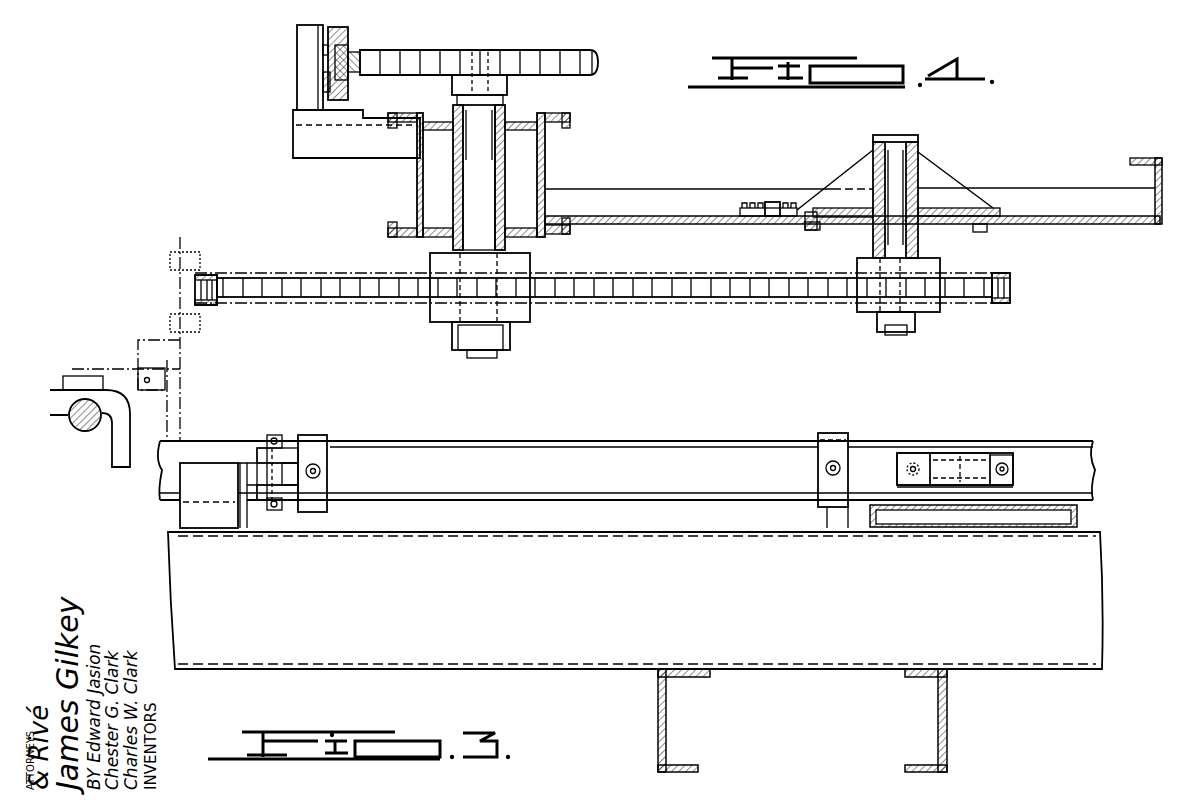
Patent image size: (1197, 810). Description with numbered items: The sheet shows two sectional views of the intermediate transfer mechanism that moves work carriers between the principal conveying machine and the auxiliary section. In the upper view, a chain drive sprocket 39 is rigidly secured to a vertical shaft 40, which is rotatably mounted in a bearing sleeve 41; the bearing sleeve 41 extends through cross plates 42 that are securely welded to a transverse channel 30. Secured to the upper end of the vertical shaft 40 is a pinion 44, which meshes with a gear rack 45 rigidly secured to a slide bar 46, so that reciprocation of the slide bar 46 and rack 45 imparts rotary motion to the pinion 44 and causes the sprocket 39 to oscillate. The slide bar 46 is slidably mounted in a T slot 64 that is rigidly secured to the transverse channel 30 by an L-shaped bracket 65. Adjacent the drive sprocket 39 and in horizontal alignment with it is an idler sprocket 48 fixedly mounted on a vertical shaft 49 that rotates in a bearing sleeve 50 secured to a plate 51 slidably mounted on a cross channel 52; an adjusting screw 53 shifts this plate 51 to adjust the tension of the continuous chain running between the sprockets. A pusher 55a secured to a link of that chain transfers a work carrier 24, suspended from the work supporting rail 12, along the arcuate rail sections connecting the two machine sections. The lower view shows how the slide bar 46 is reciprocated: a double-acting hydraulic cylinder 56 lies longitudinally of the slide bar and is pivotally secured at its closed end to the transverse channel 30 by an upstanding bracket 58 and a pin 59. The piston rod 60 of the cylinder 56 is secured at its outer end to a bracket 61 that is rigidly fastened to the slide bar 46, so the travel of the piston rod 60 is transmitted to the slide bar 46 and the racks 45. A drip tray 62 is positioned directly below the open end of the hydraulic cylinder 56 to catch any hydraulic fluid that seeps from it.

In FIG. 4, the work supporting rail 12 is at (75, 430).
In FIG. 4, the work carrier 24 is at (115, 452).
In FIG. 4, the transverse channel 30 is at (570, 121).
In FIG. 3, the transverse channel 30 is at (547, 595).
In FIG. 4, the chain drive sprocket 39 is at (650, 292).
In FIG. 4, the vertical shaft 40 is at (475, 163).
In FIG. 4, the bearing sleeve 41 is at (500, 163).
In FIG. 4, the cross plate 42 is at (518, 122).
In FIG. 4, the pinion 44 is at (578, 62).
In FIG. 4, the gear rack 45 is at (343, 53).
In FIG. 4, the slide bar 46 is at (322, 42).
In FIG. 3, the slide bar 46 is at (1070, 450).
In FIG. 4, the idler sprocket 48 is at (970, 288).
In FIG. 4, the vertical shaft 49 is at (897, 160).
In FIG. 4, the bearing sleeve 50 is at (920, 205).
In FIG. 4, the plate 51 is at (930, 228).
In FIG. 4, the cross channel 52 is at (1092, 205).
In FIG. 4, the adjusting screw 53 is at (790, 202).
In FIG. 4, the pusher 55a is at (172, 382).
In FIG. 3, the double-acting hydraulic cylinder 56 is at (490, 456).
In FIG. 3, the upstanding bracket 58 is at (212, 512).
In FIG. 3, the pin 59 is at (282, 440).
In FIG. 3, the piston rod 60 is at (900, 458).
In FIG. 3, the bracket 61 is at (1003, 455).
In FIG. 3, the drip tray 62 is at (1055, 516).
In FIG. 4, the T slot 64 is at (330, 78).
In FIG. 4, the L-shaped bracket 65 is at (302, 98).